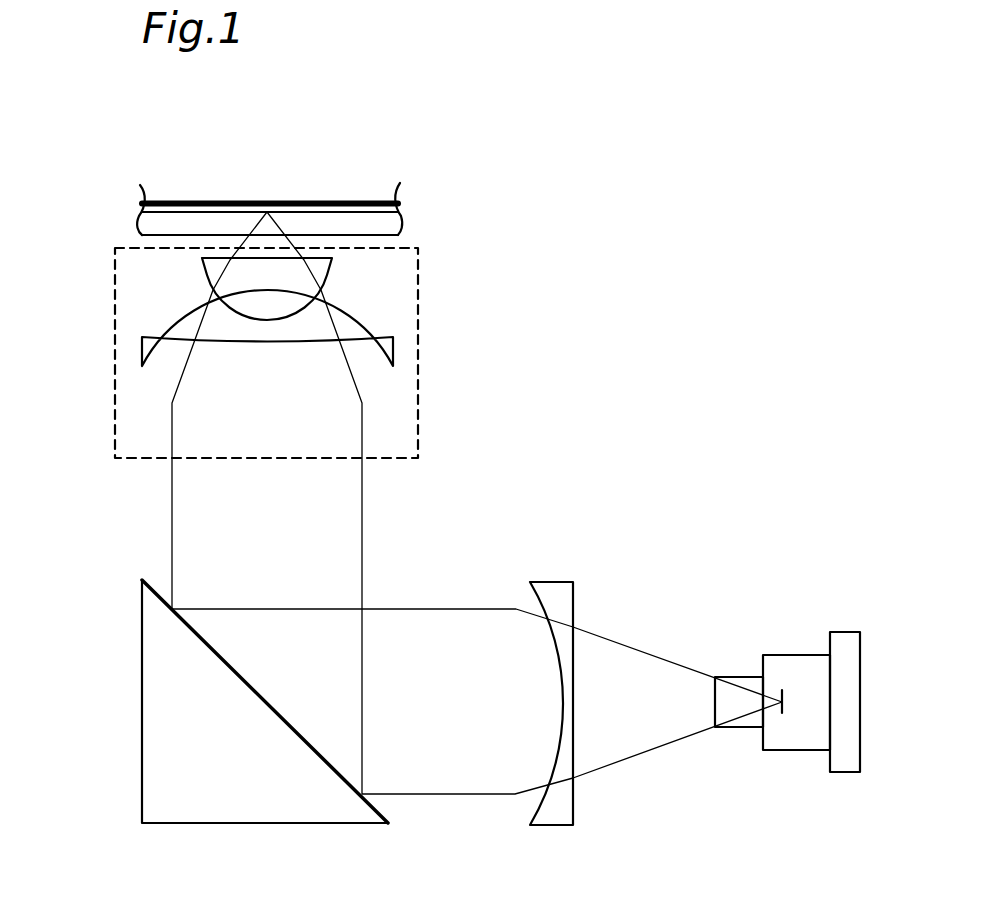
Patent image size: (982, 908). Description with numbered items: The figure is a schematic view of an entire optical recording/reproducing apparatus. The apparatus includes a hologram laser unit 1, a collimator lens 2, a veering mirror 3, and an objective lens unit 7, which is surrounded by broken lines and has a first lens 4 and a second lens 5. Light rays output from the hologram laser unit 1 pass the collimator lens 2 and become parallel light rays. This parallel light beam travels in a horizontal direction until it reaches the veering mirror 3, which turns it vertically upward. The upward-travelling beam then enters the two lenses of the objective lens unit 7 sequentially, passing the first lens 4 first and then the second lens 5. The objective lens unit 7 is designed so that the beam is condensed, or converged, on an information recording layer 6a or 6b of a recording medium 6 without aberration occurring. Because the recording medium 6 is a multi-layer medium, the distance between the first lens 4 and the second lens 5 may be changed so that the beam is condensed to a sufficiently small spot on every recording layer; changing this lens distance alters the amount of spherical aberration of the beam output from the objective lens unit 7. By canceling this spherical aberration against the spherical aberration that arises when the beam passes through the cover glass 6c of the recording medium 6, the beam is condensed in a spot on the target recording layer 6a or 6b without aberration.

The hologram laser unit 1 is at (795, 750).
The collimator lens 2 is at (550, 825).
The veering mirror 3 is at (265, 823).
The first lens 4 is at (393, 348).
The second lens 5 is at (330, 275).
The recording medium 6 is at (307, 177).
The information recording layer 6a is at (398, 211).
The information recording layer 6b is at (398, 200).
The cover glass 6c is at (395, 222).
The objective lens unit 7 is at (306, 353).